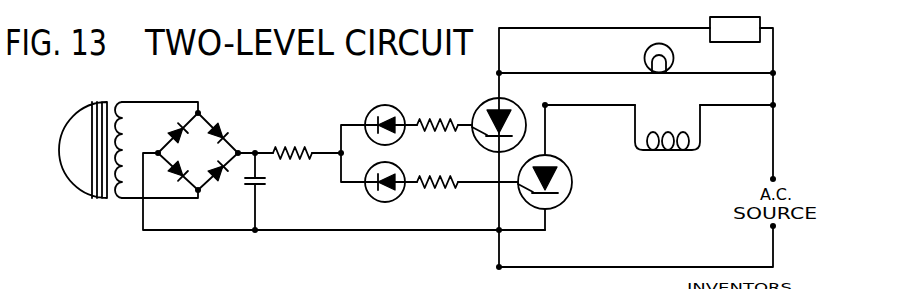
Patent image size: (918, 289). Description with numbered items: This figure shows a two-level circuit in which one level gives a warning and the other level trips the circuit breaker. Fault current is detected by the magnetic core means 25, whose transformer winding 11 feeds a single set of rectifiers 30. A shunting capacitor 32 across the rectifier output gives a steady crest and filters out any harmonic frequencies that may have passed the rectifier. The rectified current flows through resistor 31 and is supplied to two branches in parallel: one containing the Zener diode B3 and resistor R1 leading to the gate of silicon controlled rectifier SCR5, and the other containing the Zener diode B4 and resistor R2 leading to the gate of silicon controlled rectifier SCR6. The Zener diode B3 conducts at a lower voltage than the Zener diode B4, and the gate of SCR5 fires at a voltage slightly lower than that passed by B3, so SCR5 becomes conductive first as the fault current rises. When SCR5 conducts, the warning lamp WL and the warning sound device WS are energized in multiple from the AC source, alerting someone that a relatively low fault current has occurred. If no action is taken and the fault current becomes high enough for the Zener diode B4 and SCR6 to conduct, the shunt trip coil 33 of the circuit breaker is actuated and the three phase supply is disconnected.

The magnetic core means 25 is at (60, 158).
The transformer coil 11 is at (130, 139).
The set of rectifiers 30 is at (198, 151).
The resistor 31 is at (292, 141).
The shunting capacitor 32 is at (266, 187).
The Zener diode B3 is at (397, 112).
The Zener diode B4 is at (398, 196).
The resistor R1 is at (437, 114).
The resistor R2 is at (437, 170).
The silicon controlled rectifier SCR5 is at (513, 107).
The silicon controlled rectifier SCR6 is at (558, 158).
The shunt trip coil 33 is at (668, 154).
The warning lamp WL is at (675, 58).
The warning sound device WS is at (728, 17).